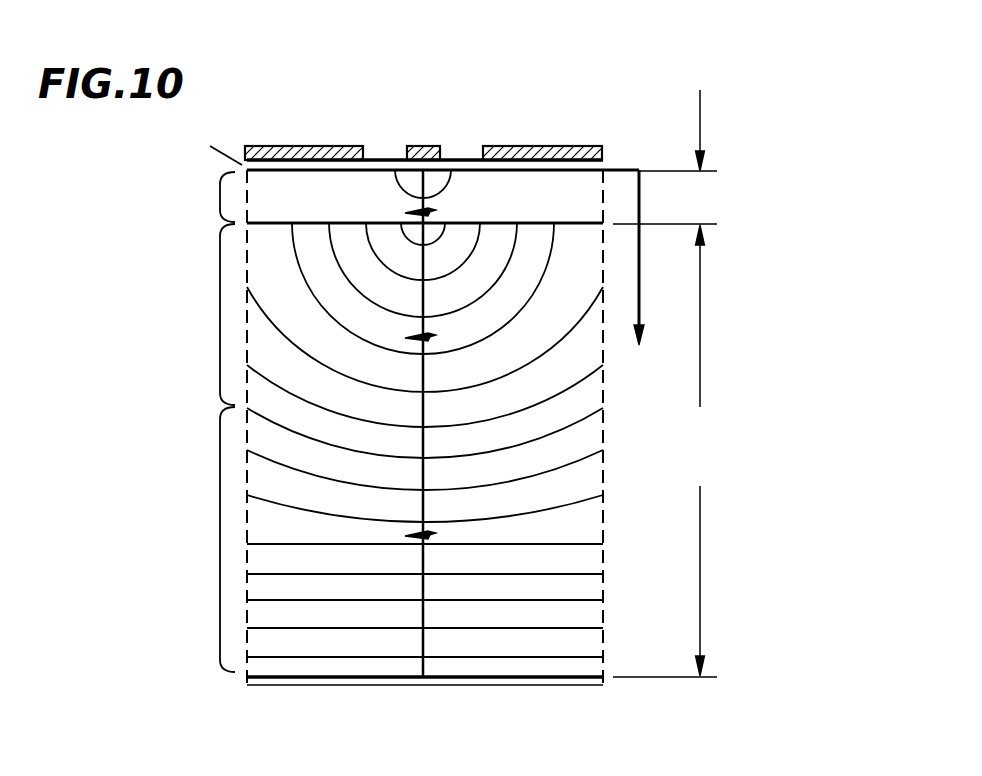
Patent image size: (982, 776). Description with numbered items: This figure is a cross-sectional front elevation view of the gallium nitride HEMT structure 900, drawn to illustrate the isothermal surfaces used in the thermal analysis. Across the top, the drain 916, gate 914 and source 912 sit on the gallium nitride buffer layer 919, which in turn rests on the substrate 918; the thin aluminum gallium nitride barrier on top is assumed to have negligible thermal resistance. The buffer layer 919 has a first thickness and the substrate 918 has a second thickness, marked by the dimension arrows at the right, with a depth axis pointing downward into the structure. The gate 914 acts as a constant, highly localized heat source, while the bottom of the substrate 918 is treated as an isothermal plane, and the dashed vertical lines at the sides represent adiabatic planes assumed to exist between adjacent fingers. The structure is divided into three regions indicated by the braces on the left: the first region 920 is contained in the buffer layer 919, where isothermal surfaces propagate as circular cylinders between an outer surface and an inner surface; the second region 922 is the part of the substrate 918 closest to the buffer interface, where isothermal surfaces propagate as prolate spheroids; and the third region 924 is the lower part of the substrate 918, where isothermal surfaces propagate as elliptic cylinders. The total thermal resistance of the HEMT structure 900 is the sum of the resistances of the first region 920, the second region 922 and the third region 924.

The HEMT structure 900 is at (742, 62).
The source 912 is at (567, 145).
The gate 914 is at (408, 145).
The drain 916 is at (290, 145).
The substrate 918 is at (748, 460).
The GaN layer 919 is at (748, 192).
The region I 920 is at (166, 199).
The region II 922 is at (138, 304).
The region III 924 is at (130, 534).